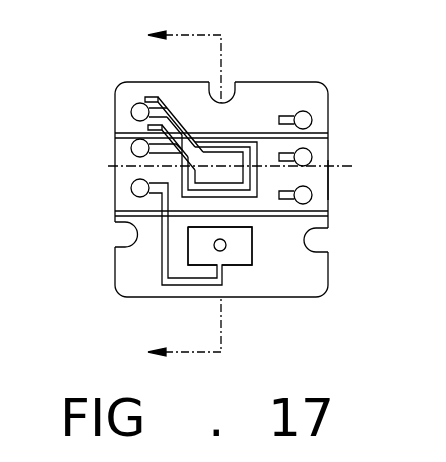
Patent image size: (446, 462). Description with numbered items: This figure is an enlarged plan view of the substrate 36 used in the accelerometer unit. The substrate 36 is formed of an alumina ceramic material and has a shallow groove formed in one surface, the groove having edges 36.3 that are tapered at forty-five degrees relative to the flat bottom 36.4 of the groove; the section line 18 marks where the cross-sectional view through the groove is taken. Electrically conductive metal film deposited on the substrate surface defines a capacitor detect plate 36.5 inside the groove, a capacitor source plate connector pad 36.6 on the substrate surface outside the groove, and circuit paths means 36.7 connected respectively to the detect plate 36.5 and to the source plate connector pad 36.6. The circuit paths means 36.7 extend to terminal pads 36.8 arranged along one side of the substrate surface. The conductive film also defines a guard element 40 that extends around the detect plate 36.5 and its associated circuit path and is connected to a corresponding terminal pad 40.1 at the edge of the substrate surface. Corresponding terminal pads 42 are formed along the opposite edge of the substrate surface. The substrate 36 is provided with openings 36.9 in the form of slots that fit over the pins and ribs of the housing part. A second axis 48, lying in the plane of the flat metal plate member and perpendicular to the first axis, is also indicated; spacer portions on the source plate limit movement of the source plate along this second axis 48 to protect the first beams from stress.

The section line 18 is at (158, 197).
The substrate 36 is at (326, 79).
The edges of the groove 36.3 is at (313, 135).
The flat bottom of the groove 36.4 is at (322, 176).
The capacitor detect plate 36.5 is at (222, 155).
The capacitor source plate connector pad 36.6 is at (237, 256).
The circuit paths means 36.7 is at (158, 106).
The terminal pads 36.8 is at (131, 110).
The openings 36.9 is at (222, 83).
The guard element 40 is at (140, 92).
The terminal pad 40.1 is at (131, 148).
The terminal pads 42 is at (303, 118).
The second axis 48 is at (103, 165).